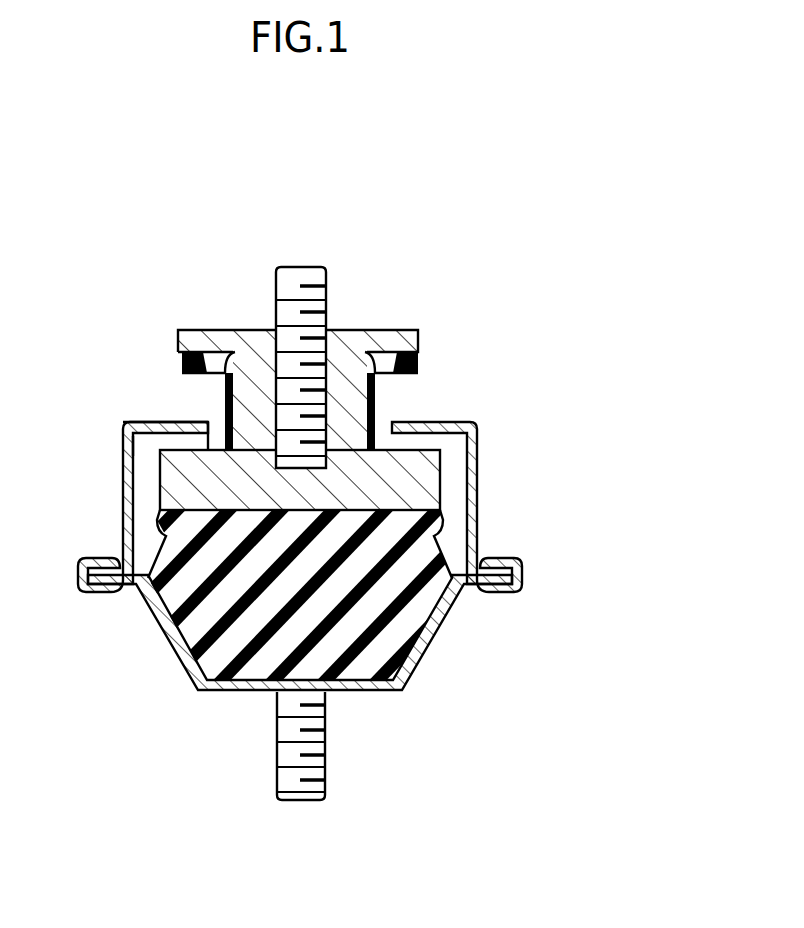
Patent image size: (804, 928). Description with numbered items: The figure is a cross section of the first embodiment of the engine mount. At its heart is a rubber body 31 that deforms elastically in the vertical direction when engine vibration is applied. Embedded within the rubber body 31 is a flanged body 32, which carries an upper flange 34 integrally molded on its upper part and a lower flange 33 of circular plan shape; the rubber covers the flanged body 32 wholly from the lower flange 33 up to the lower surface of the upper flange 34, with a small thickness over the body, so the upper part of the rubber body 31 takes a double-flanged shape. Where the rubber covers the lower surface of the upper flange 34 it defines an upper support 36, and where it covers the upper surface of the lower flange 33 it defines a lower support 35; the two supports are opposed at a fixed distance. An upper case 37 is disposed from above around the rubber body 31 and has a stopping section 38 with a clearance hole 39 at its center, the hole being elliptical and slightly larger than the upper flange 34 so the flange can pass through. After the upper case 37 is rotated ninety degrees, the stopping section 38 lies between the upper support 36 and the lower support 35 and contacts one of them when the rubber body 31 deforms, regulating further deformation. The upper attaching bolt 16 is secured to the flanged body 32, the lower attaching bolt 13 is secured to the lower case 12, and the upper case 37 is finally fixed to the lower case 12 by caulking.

The lower case 12 is at (410, 665).
The lower attaching bolt 13 is at (320, 748).
The upper attaching bolt 16 is at (307, 275).
The rubber body 31 is at (413, 623).
The flanged body 32 is at (380, 410).
The lower flange 33 is at (413, 497).
The upper flange 34 is at (276, 315).
The lower support 35 is at (127, 447).
The upper support 36 is at (187, 380).
The upper case 37 is at (123, 522).
The stopping section 38 is at (210, 423).
The clearance hole 39 is at (213, 418).